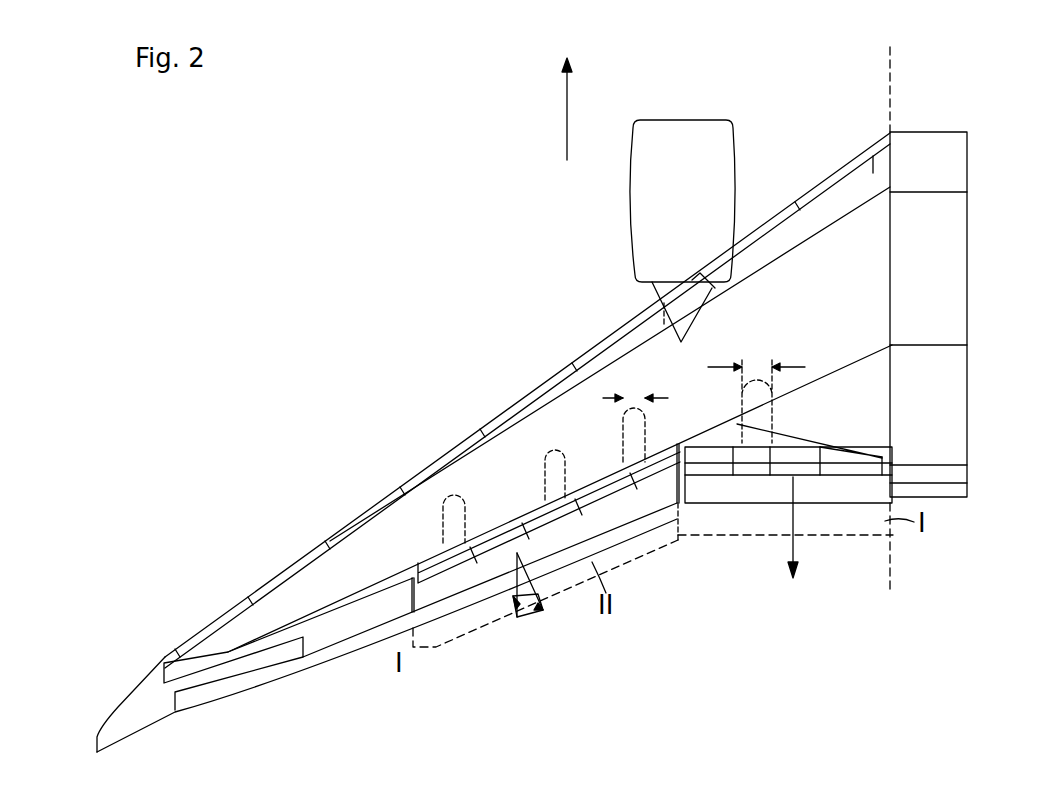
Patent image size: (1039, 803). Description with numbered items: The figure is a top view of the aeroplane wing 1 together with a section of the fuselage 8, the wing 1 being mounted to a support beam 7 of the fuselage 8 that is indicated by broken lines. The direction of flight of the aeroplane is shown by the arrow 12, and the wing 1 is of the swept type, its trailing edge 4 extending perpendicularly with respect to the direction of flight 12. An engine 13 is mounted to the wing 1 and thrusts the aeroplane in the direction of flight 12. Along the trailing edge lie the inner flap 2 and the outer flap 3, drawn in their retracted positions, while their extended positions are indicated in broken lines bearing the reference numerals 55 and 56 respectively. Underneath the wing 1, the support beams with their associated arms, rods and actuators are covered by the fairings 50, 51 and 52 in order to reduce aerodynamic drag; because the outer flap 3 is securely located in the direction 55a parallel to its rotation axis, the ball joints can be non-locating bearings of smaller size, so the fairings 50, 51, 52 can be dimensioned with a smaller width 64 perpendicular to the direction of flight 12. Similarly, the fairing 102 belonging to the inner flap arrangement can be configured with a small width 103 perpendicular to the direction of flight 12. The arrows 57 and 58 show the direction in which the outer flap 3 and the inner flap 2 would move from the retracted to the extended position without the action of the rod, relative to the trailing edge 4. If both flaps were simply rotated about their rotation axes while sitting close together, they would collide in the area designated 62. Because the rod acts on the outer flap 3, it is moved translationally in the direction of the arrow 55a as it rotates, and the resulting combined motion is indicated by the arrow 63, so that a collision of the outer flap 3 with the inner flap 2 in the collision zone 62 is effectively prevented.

The wing 1 is at (485, 458).
The inner flap 2 is at (713, 493).
The outer flap 3 is at (464, 588).
The trailing edge 4 is at (750, 486).
The support beam 7 is at (950, 490).
The fuselage 8 is at (893, 82).
The direction of flight 12 is at (557, 108).
The engine 13 is at (722, 177).
The fairing 50 is at (632, 440).
The fairing 51 is at (543, 448).
The fairing 52 is at (455, 494).
The extended position of the inner flap 55 is at (862, 536).
The direction parallel to the rotation axis 55a is at (538, 621).
The extended position of the outer flap 56 is at (434, 649).
The arrow 57 is at (533, 588).
The arrow 58 is at (796, 524).
The collision zone 62 is at (678, 540).
The arrow 63 is at (513, 605).
The width 64 is at (630, 395).
The fairing 102 is at (747, 398).
The width 103 is at (757, 362).